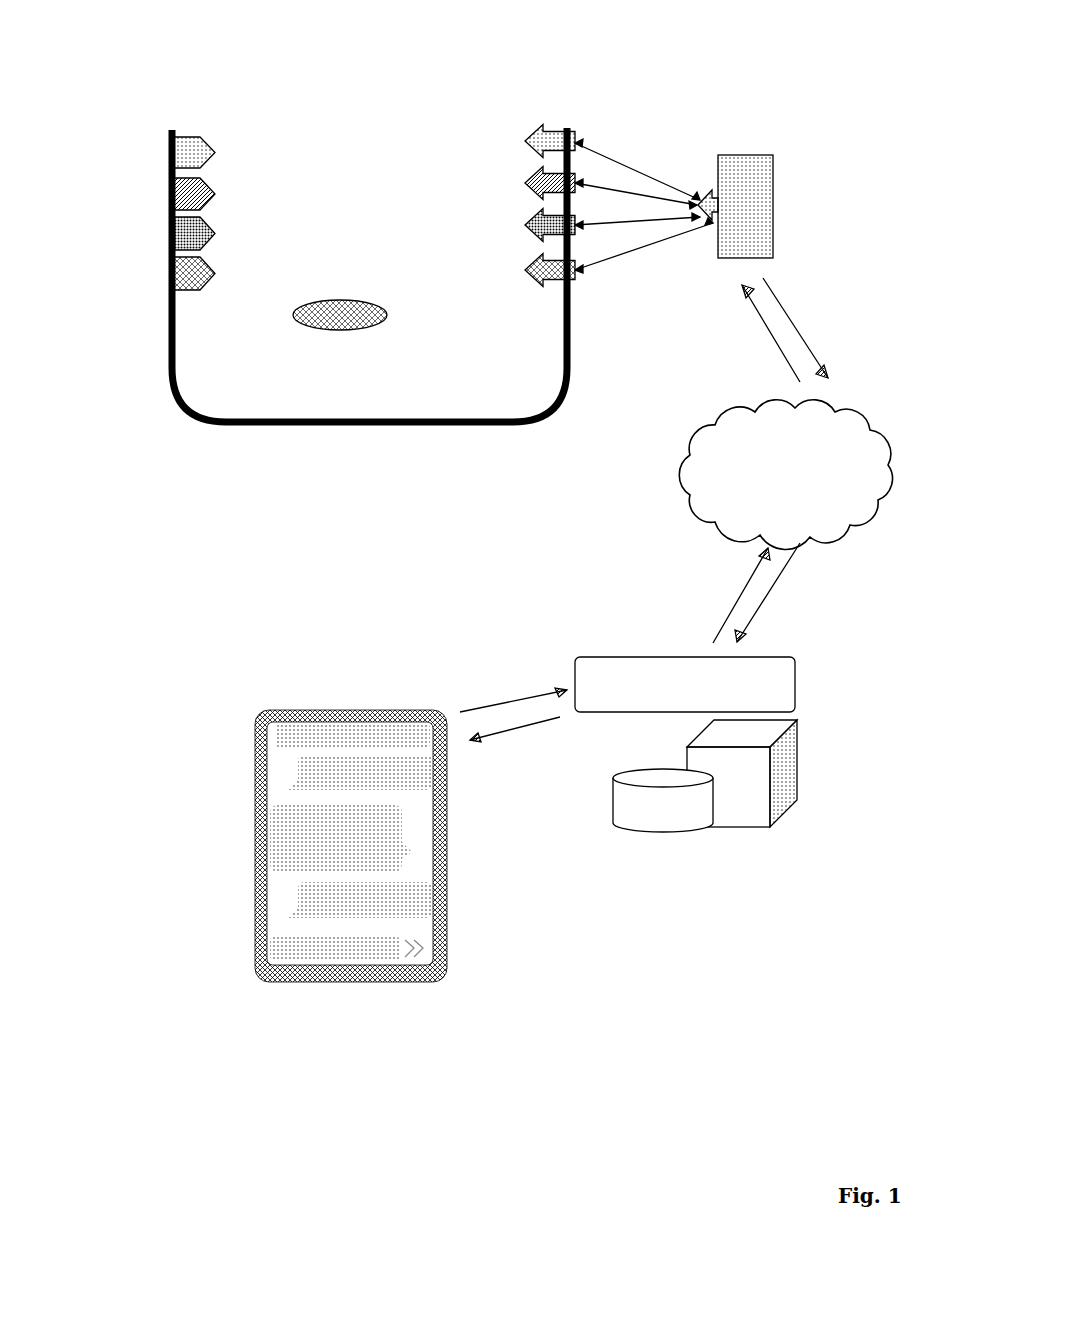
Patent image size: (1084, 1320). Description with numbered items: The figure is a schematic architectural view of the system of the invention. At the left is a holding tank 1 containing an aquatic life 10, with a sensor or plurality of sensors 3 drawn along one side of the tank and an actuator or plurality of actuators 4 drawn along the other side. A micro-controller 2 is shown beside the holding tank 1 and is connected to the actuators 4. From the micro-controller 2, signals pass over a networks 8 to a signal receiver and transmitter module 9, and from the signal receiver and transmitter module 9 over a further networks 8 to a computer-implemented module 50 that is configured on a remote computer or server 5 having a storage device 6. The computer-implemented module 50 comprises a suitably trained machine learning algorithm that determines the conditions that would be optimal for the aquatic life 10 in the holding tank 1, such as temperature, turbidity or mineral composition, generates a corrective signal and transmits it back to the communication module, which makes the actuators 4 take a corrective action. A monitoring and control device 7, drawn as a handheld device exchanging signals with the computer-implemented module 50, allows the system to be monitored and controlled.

The holding tank 1 is at (169, 328).
The micro-controller 2 is at (773, 205).
The sensors 3 is at (172, 232).
The actuators 4 is at (575, 180).
The remote computer or server 5 is at (778, 762).
The storage device 6 is at (670, 828).
The monitoring and control device 7 is at (260, 860).
The networks 8 is at (783, 313).
The signal receiver and transmitter module 9 is at (872, 468).
The aquatic life 10 is at (300, 322).
The computer-implemented module 50 is at (780, 682).